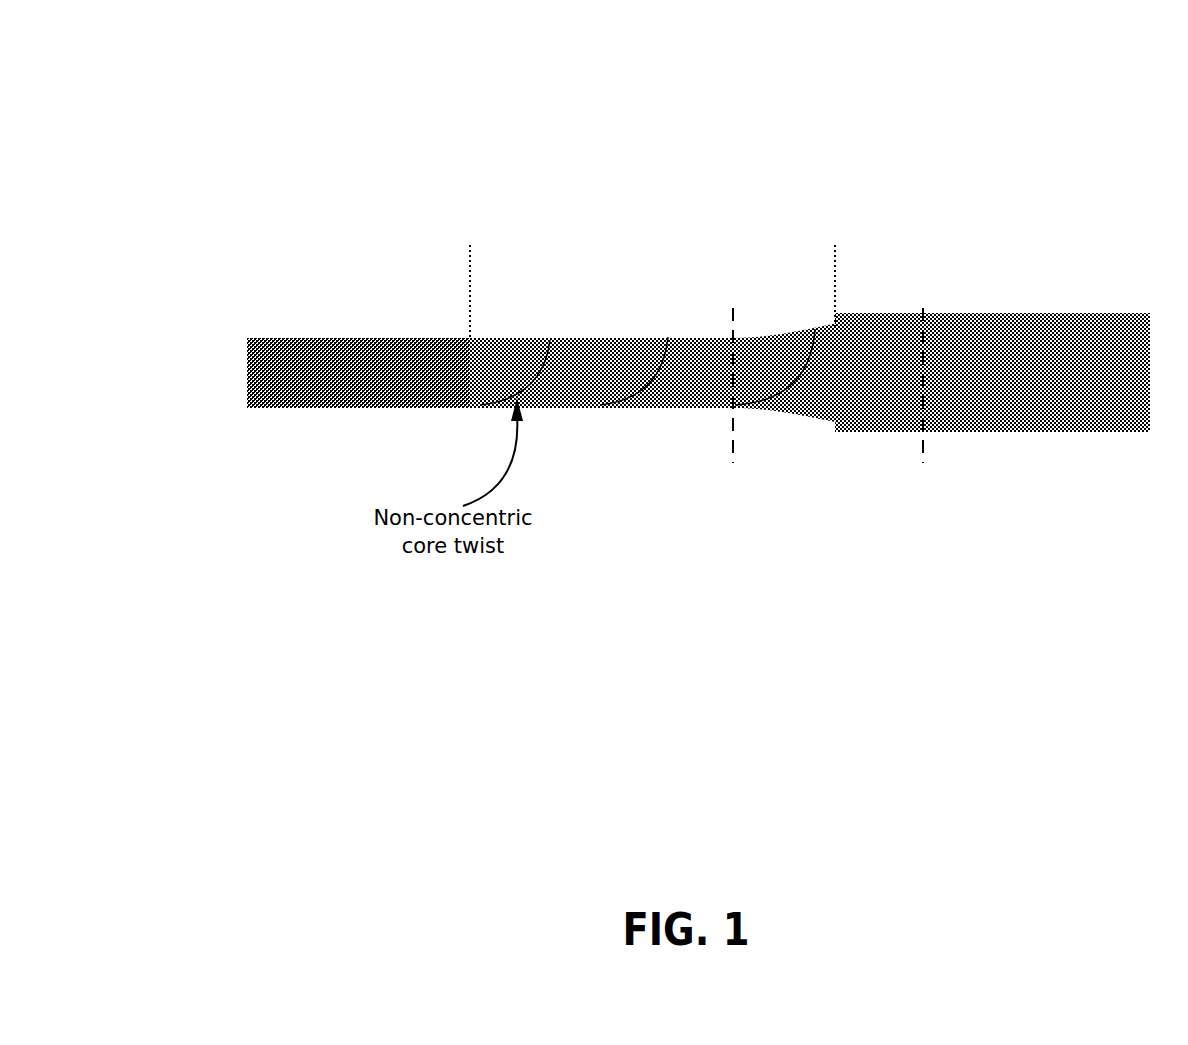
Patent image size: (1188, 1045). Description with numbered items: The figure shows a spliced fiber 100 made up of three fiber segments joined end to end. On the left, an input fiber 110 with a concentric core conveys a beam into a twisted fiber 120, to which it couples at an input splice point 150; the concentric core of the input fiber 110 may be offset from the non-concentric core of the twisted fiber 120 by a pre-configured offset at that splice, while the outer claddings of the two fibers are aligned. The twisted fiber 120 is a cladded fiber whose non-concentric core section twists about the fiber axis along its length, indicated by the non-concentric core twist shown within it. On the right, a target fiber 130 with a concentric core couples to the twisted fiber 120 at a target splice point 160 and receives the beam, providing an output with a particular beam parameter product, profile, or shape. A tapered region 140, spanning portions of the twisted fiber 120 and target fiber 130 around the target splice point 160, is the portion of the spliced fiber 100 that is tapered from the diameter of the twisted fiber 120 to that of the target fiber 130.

The spliced fiber 100 is at (168, 52).
The input fiber 110 is at (232, 243).
The twisted fiber 120 is at (835, 243).
The target fiber 130 is at (838, 243).
The tapered region 140 is at (733, 467).
The input splice point 150 is at (469, 297).
The target splice point 160 is at (835, 289).